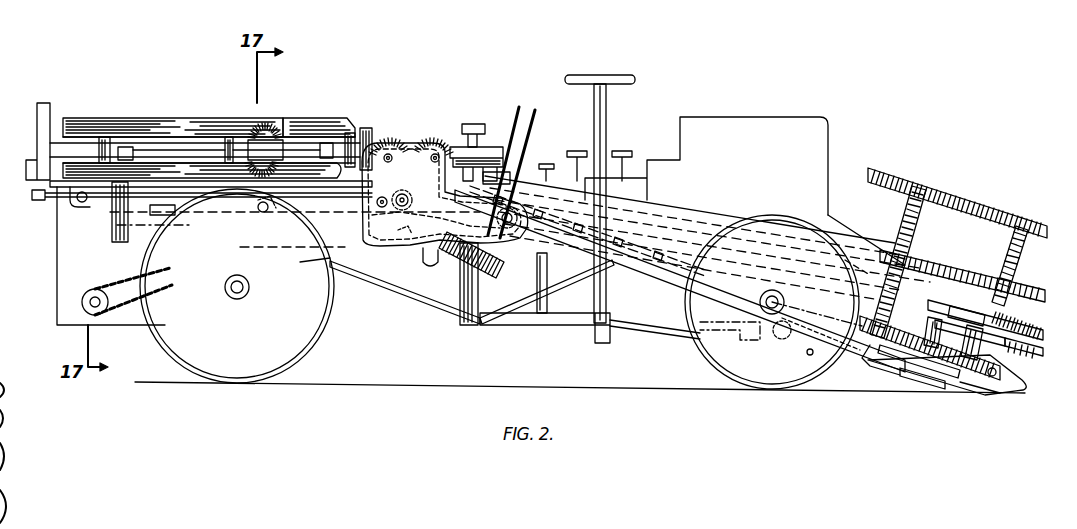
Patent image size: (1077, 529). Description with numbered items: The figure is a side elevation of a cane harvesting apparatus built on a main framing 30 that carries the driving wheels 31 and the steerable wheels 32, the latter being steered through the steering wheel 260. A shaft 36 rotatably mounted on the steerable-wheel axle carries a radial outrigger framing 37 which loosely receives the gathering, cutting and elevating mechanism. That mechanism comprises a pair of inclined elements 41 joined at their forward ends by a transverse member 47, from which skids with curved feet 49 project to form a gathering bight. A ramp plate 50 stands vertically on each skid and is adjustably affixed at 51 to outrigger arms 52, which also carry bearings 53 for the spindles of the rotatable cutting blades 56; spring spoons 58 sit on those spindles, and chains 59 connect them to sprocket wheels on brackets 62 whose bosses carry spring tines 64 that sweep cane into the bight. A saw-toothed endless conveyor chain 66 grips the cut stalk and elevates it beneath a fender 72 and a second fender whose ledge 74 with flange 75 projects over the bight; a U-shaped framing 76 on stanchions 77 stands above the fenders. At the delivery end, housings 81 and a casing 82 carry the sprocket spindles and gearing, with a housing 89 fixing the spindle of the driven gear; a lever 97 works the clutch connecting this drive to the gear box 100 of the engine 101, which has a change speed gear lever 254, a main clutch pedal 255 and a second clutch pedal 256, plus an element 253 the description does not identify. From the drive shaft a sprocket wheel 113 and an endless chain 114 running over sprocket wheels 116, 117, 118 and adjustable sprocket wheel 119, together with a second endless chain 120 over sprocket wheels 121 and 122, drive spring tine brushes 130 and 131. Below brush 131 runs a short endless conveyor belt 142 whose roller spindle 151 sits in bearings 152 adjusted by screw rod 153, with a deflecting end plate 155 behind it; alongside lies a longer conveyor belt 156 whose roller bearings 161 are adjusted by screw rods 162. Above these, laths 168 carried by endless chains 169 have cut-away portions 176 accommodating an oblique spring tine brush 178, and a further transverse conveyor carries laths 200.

The main framing 30 is at (36, 192).
The driving wheels 31 is at (287, 370).
The steerable wheels 32 is at (738, 386).
The shaft 36 is at (772, 334).
The outrigger framing 37 is at (808, 355).
The inclined elements 41 is at (668, 302).
The transverse member 47 is at (863, 367).
The curved feet 49 is at (1017, 395).
The ramp plate 50 is at (992, 397).
The adjustable attachment 51 is at (977, 393).
The outrigger arms 52 is at (947, 385).
The bearings 53 is at (930, 333).
The rotatable cutting blades 56 is at (897, 368).
The spring spoons 58 is at (913, 366).
The chains 59 is at (967, 317).
The brackets 62 is at (975, 347).
The spring tines 64 is at (1003, 318).
The endless conveyor chain 66 is at (707, 270).
The fender 72 is at (857, 233).
The ledge 74 is at (858, 267).
The flange 75 is at (917, 268).
The U-shaped framing 76 is at (935, 186).
The stanchions 77 is at (908, 222).
The housings 81 is at (502, 175).
The casing 82 is at (470, 262).
The housing 89 is at (500, 275).
The lever 97 is at (521, 105).
The gear box 100 is at (637, 188).
The engine 101 is at (706, 166).
The sprocket wheel 113 is at (530, 270).
The endless chain 114 is at (407, 147).
The sprocket wheel 116 is at (432, 163).
The sprocket wheel 117 is at (393, 160).
The sprocket wheel 118 is at (478, 150).
The adjustable sprocket wheel 119 is at (372, 192).
The endless chain 120 is at (448, 243).
The sprocket wheel 121 is at (398, 204).
The sprocket wheel 122 is at (403, 230).
The spring tine brush 130 is at (437, 135).
The spring tine brush 131 is at (393, 135).
The short endless conveyor belt 142 is at (322, 252).
The spindle 151 is at (270, 208).
The bearings 152 is at (263, 212).
The screw rod 153 is at (167, 197).
The deflecting end plate 155 is at (63, 122).
The conveyor belt 156 is at (150, 213).
The bearings 161 is at (84, 203).
The screw rods 162 is at (57, 203).
The laths 168 is at (73, 123).
The endless chains 169 is at (105, 138).
The cut-away portions 176 is at (285, 125).
The spring tine brush 178 is at (248, 132).
The laths 200 is at (474, 123).
The lever 253 is at (547, 164).
The change speed gear lever 254 is at (537, 108).
The main clutch pedal 255 is at (632, 152).
The second clutch pedal 256 is at (583, 152).
The steering wheel 260 is at (610, 77).